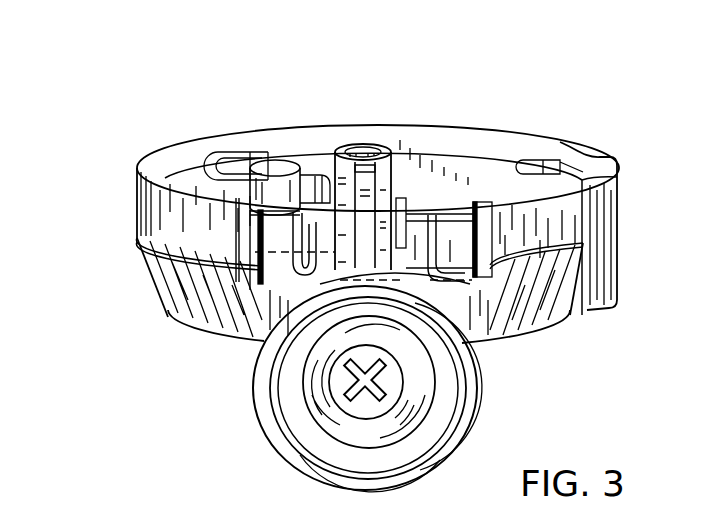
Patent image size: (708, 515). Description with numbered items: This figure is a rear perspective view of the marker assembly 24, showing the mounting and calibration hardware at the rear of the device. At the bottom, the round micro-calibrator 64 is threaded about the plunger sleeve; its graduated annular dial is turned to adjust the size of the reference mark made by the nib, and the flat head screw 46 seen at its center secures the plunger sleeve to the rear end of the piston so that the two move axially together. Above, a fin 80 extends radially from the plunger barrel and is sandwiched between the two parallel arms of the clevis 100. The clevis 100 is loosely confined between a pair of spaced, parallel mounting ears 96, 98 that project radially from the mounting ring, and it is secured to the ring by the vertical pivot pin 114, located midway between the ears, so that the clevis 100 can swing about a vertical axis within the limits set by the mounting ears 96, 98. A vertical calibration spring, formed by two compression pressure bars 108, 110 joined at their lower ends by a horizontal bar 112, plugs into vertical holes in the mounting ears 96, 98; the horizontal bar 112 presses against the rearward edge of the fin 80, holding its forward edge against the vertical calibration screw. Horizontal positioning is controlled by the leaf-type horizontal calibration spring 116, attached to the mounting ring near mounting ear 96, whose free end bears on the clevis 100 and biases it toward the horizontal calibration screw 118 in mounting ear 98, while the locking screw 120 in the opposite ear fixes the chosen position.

The marker assembly 24 is at (148, 389).
The flat head screw 46 is at (356, 406).
The micro-calibrator 64 is at (486, 403).
The fin 80 is at (365, 240).
The mounting ear 96 is at (300, 232).
The mounting ear 98 is at (480, 220).
The clevis 100 is at (390, 165).
The compression pressure bar 108 is at (258, 326).
The compression pressure bar 110 is at (440, 236).
The horizontal bar 112 is at (296, 264).
The pivot pin 114 is at (364, 144).
The horizontal calibration spring 116 is at (310, 163).
The horizontal calibration screw 118 is at (486, 264).
The locking screw 120 is at (290, 293).